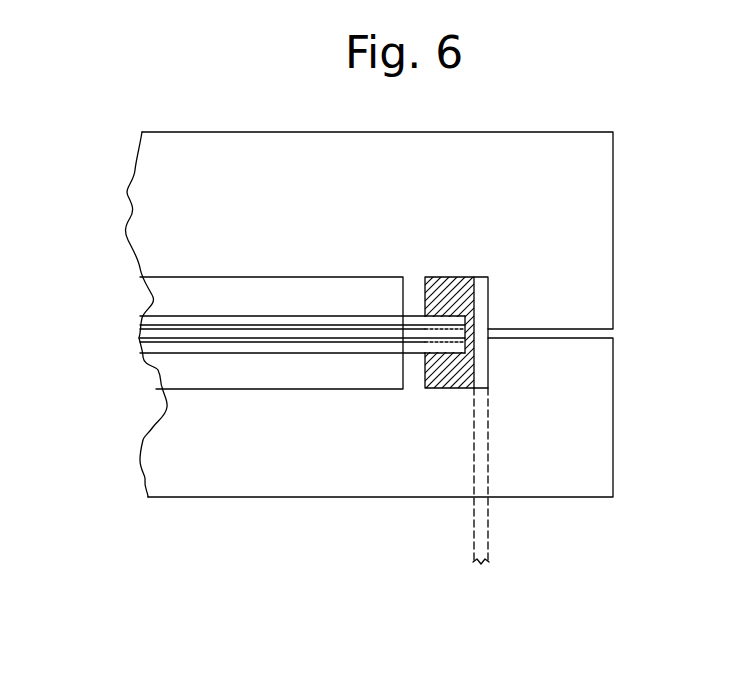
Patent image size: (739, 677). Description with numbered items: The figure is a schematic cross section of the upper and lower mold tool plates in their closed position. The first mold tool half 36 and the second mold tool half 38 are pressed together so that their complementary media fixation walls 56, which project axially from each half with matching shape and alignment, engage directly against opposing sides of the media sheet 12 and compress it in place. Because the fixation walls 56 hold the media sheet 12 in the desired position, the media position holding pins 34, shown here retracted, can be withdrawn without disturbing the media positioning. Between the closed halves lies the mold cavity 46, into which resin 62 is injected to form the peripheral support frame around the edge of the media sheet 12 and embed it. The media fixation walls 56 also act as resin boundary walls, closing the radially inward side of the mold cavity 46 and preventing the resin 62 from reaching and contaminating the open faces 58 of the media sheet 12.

The media sheet 12 is at (144, 320).
The media position holding pins 34 is at (489, 535).
The first mold tool half 36 is at (570, 417).
The second mold tool half 38 is at (570, 270).
The mold cavity 46 is at (457, 288).
The media fixation walls 56 is at (418, 288).
The open faces 58 is at (323, 316).
The resin 62 is at (440, 290).